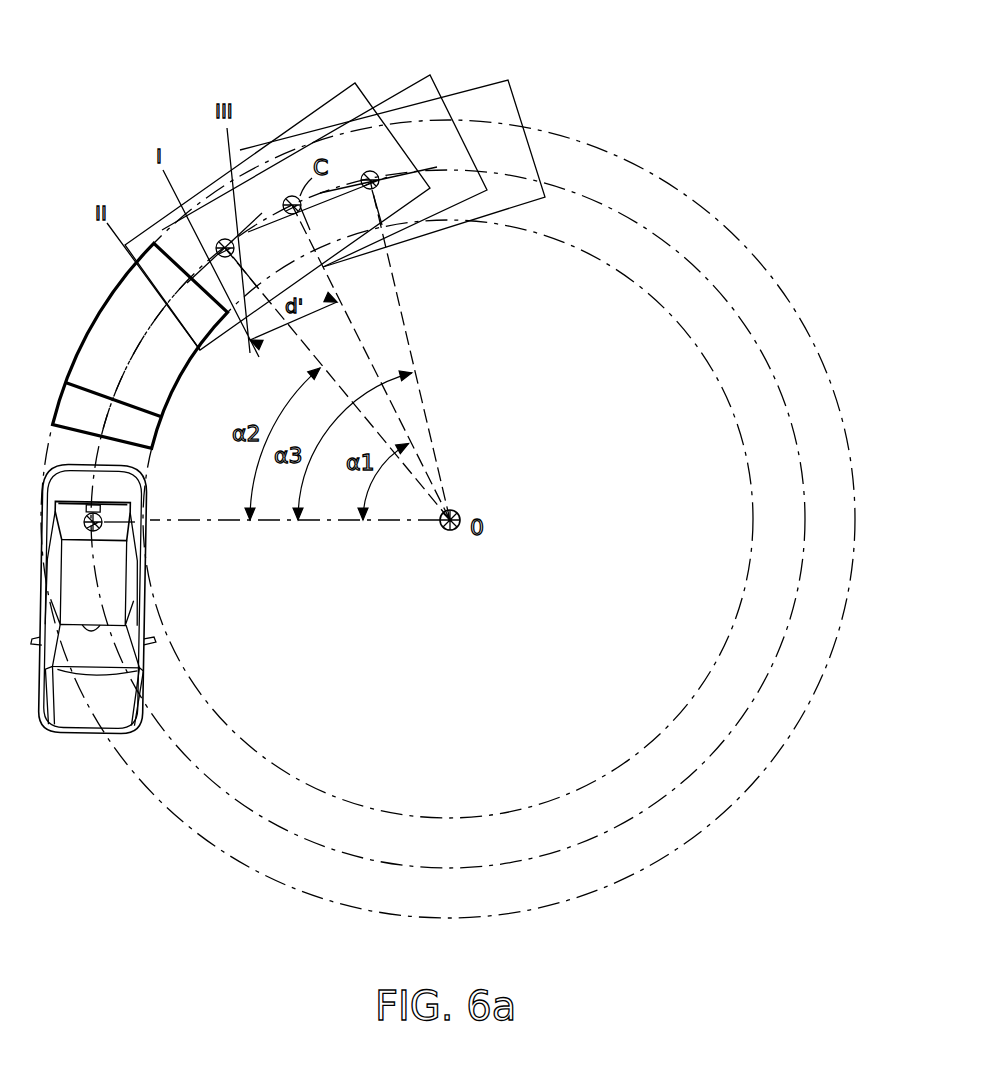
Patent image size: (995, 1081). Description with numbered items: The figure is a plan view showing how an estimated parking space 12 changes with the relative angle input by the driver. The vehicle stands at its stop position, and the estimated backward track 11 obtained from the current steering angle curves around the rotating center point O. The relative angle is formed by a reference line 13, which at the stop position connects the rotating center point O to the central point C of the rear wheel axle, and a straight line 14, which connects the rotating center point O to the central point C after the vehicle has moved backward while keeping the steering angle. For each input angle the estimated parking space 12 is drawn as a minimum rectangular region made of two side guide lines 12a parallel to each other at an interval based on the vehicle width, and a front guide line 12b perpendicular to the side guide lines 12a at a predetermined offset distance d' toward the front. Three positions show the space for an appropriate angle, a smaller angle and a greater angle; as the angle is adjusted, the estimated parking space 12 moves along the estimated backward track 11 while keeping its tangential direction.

The estimated backward track 11 is at (96, 314).
The estimated parking space 12 is at (425, 72).
The side guide lines 12a is at (387, 93).
The front guide line 12b is at (162, 176).
The reference line 13 is at (180, 522).
The straight line 14 is at (357, 342).